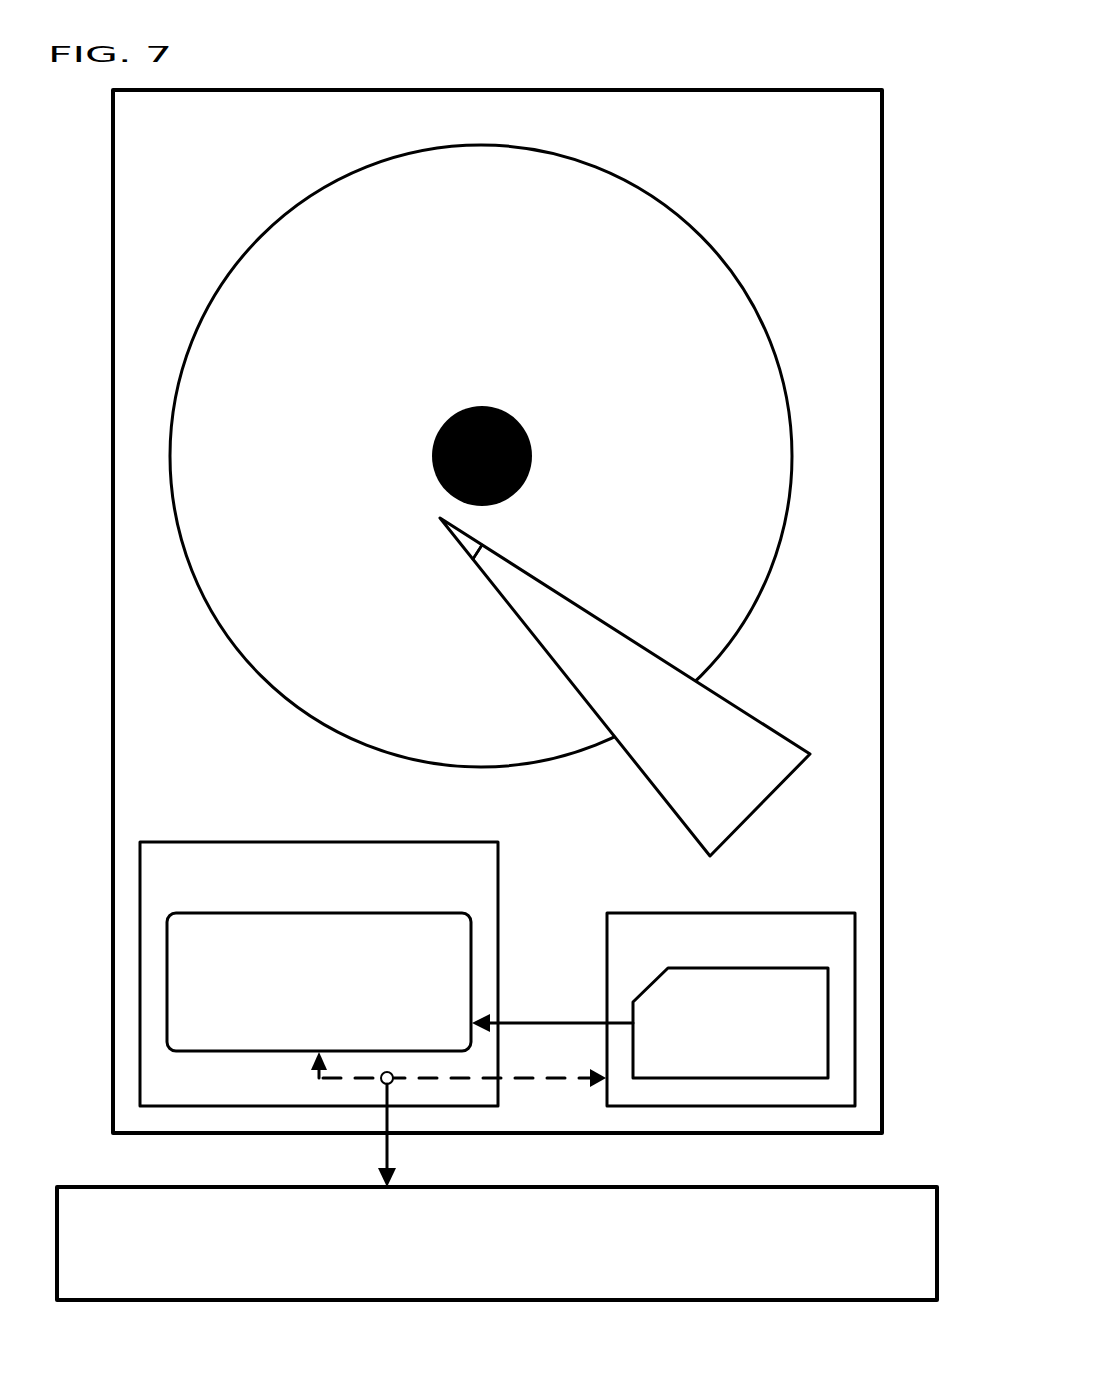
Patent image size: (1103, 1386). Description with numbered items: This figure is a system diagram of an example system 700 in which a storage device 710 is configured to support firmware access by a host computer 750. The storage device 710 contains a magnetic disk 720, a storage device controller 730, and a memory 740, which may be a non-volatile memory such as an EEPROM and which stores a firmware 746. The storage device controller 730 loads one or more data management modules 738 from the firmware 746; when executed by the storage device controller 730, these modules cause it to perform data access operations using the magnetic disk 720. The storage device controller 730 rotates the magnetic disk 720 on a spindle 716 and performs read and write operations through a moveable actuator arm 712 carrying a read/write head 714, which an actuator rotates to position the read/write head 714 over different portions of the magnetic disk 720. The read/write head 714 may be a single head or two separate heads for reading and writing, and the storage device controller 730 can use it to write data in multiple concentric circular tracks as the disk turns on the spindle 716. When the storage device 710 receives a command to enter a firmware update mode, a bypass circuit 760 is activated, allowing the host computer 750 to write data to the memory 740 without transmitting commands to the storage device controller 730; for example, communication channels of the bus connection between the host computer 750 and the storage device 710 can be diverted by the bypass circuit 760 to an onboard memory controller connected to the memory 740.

The system 700 is at (902, 72).
The storage device 710 is at (497, 611).
The actuator arm 712 is at (747, 713).
The read/write head 714 is at (455, 532).
The spindle 716 is at (531, 460).
The magnetic disk 720 is at (481, 456).
The storage device controller 730 is at (319, 974).
The data management modules 738 is at (319, 982).
The memory 740 is at (731, 1009).
The firmware 746 is at (730, 1023).
The host computer 750 is at (497, 1243).
The bypass circuit 760 is at (383, 1085).